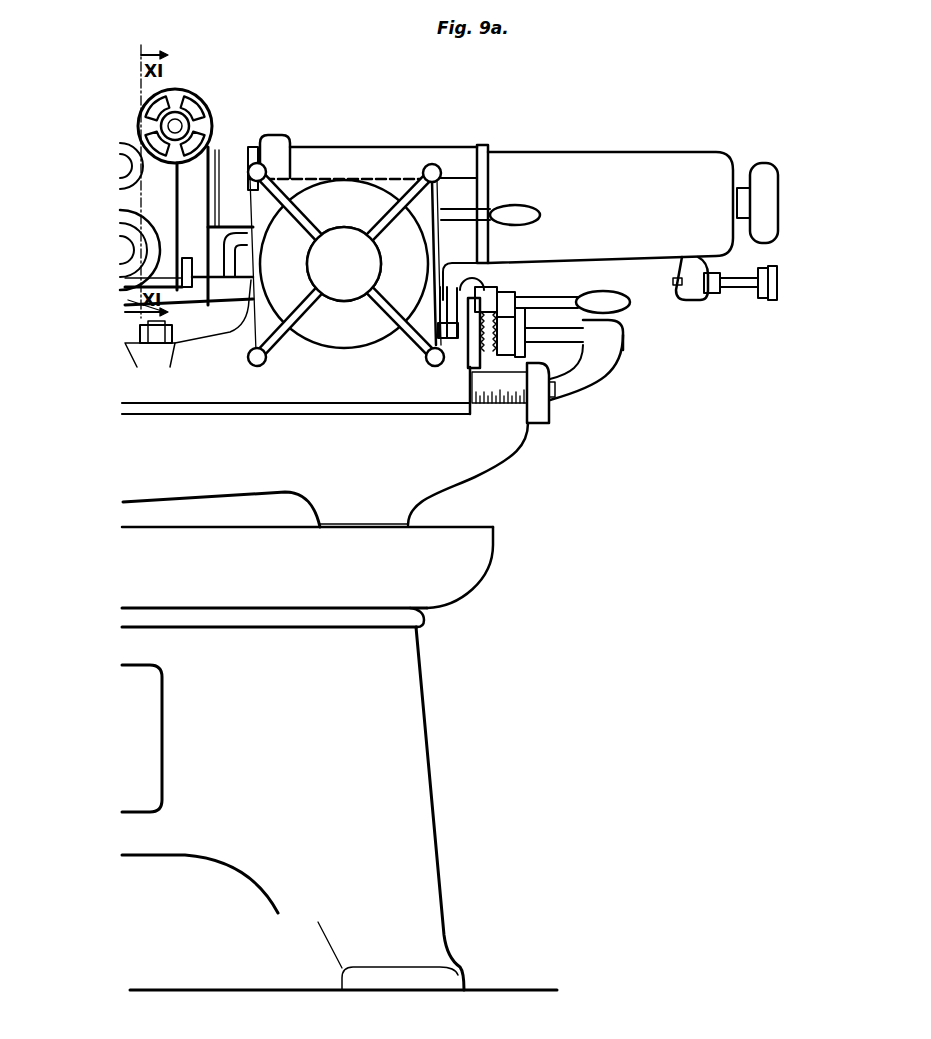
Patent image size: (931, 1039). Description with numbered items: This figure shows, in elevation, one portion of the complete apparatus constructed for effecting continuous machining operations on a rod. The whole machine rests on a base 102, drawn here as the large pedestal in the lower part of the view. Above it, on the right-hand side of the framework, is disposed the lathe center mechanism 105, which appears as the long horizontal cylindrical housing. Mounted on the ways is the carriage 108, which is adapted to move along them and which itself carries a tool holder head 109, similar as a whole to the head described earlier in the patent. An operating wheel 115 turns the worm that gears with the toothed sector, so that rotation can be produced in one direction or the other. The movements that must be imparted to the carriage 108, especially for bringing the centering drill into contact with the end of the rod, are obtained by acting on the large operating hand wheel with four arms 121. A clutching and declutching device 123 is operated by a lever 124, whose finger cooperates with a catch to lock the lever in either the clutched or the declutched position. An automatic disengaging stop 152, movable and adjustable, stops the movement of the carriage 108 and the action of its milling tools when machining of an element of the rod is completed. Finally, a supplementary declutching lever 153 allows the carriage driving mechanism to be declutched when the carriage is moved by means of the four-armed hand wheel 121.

The base 102 is at (402, 697).
The lathe center mechanism 105 is at (449, 158).
The carriage 108 is at (242, 398).
The tool holder head 109 is at (163, 215).
The operating wheel 115 is at (205, 110).
The operating hand wheel with four arms 121 is at (262, 360).
The clutching and declutching device 123 is at (492, 357).
The lever 124 is at (602, 301).
The automatic disengaging stop 152 is at (672, 291).
The supplementary declutching lever 153 is at (523, 216).